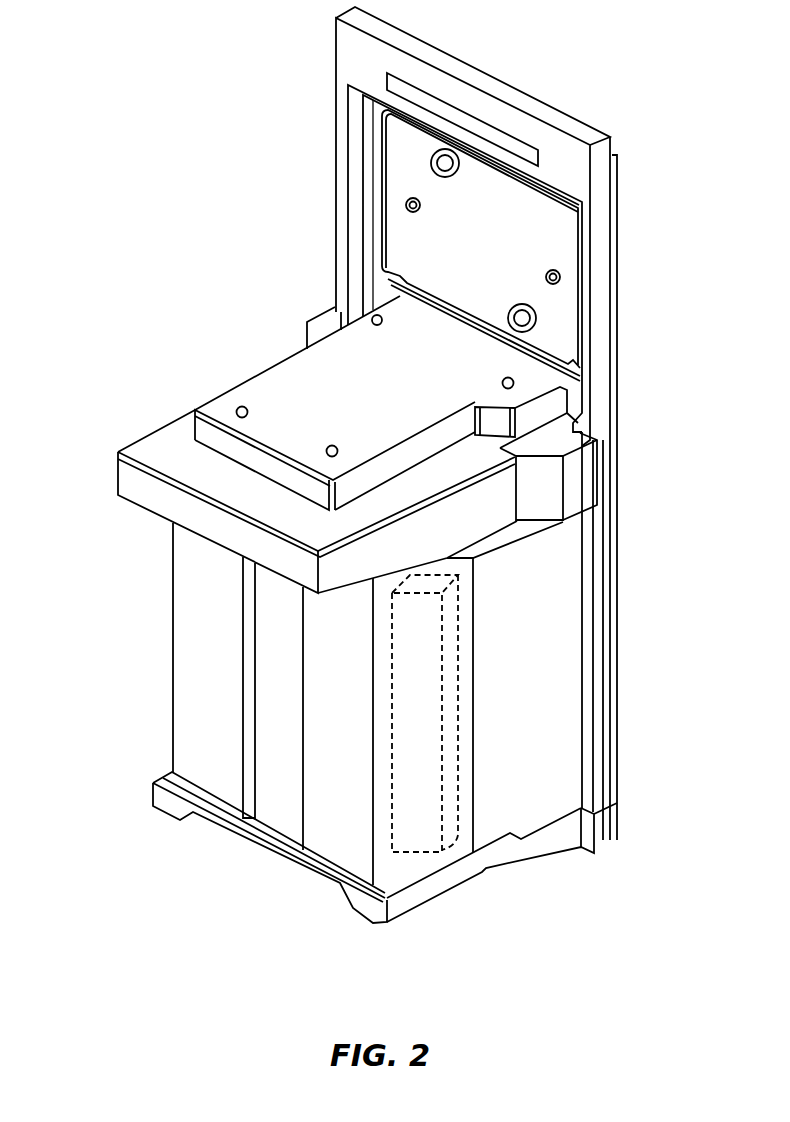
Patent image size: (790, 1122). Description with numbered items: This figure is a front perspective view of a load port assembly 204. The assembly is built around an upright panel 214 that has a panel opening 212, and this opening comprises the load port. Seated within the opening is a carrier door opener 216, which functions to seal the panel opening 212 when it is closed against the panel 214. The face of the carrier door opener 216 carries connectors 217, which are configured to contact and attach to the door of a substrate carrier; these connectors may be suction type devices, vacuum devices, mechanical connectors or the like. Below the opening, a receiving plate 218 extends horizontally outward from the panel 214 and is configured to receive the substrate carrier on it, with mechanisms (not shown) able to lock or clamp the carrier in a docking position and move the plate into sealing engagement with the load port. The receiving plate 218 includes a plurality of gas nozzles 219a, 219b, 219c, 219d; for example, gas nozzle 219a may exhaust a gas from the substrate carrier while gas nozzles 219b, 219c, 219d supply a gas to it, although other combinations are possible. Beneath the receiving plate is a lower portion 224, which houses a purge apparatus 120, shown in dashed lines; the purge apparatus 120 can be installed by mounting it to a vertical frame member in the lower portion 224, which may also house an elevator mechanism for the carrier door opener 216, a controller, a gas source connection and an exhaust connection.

The load port assembly 204 is at (175, 85).
The panel 214 is at (578, 118).
The panel opening 212 is at (558, 232).
The carrier door opener 216 is at (493, 244).
The connectors 217 is at (506, 310).
The receiving plate 218 is at (302, 382).
The gas nozzle 219a is at (371, 316).
The gas nozzle 219b is at (502, 382).
The gas nozzle 219c is at (238, 405).
The gas nozzle 219d is at (326, 451).
The lower portion 224 is at (555, 641).
The purge apparatus 120 is at (457, 735).